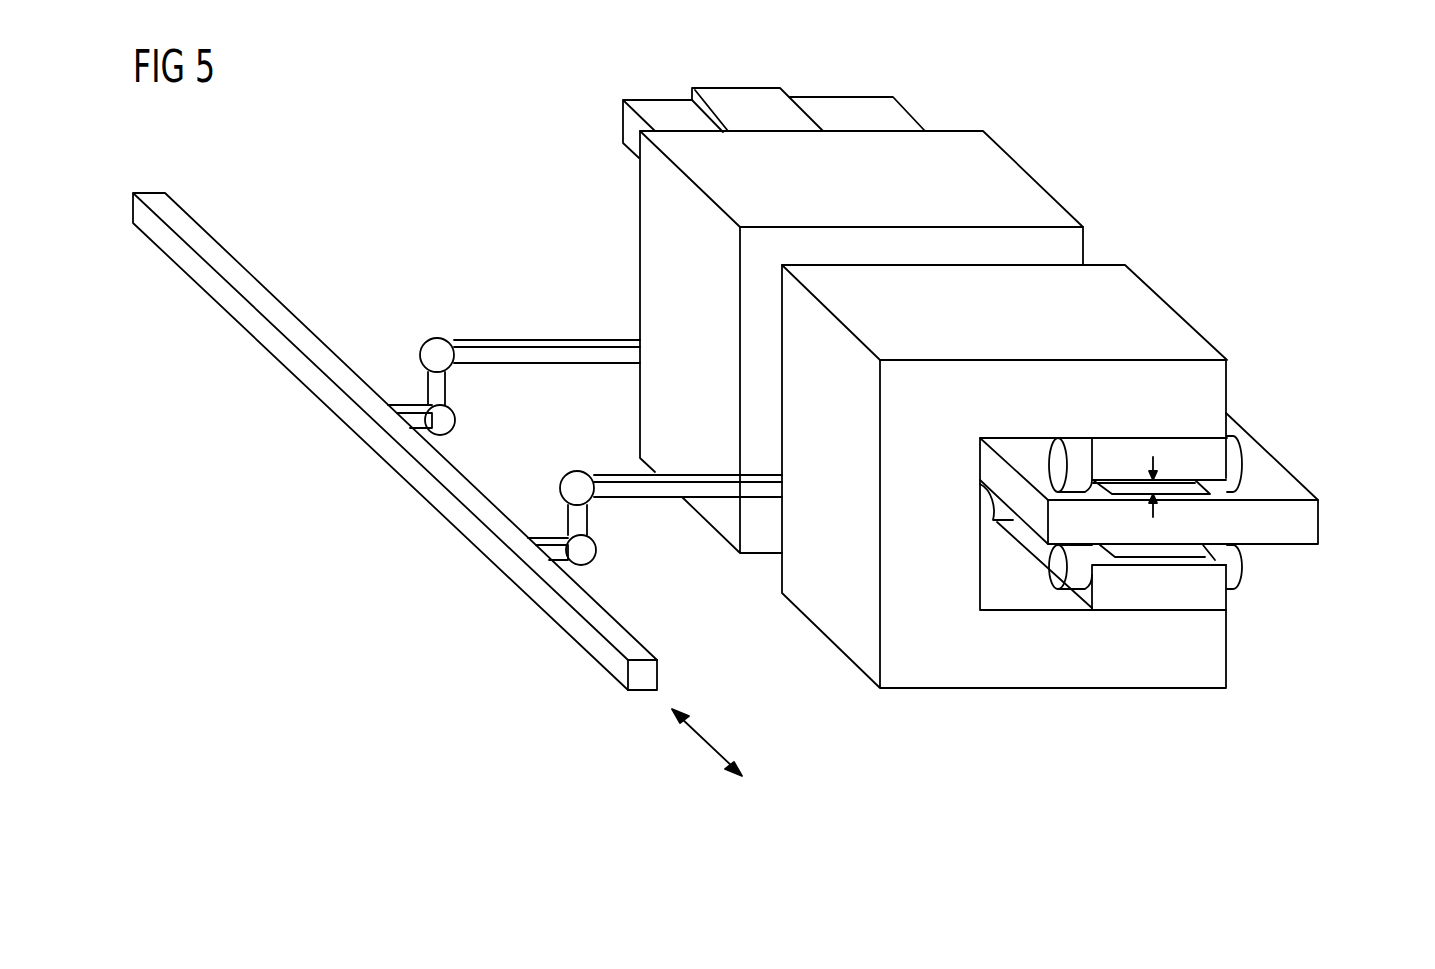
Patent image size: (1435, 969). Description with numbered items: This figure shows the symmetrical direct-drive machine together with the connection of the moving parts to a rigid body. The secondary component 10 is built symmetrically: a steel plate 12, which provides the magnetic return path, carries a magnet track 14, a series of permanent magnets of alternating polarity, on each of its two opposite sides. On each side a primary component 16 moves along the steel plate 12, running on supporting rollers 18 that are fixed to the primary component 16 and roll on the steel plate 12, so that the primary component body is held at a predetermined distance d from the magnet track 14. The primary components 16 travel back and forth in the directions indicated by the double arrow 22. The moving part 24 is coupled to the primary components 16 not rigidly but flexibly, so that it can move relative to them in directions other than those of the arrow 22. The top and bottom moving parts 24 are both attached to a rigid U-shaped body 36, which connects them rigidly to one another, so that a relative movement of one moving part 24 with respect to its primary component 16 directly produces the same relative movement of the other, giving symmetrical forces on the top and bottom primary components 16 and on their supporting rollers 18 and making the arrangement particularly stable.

The secondary component 10 is at (1333, 550).
The steel plate 12 is at (1302, 522).
The magnet track 14 is at (1141, 497).
The primary component 16 is at (1112, 452).
The supporting roller 18 is at (1074, 437).
The arrows 22 is at (710, 742).
The moving part 24 is at (486, 541).
The U-shaped body 36 is at (654, 305).